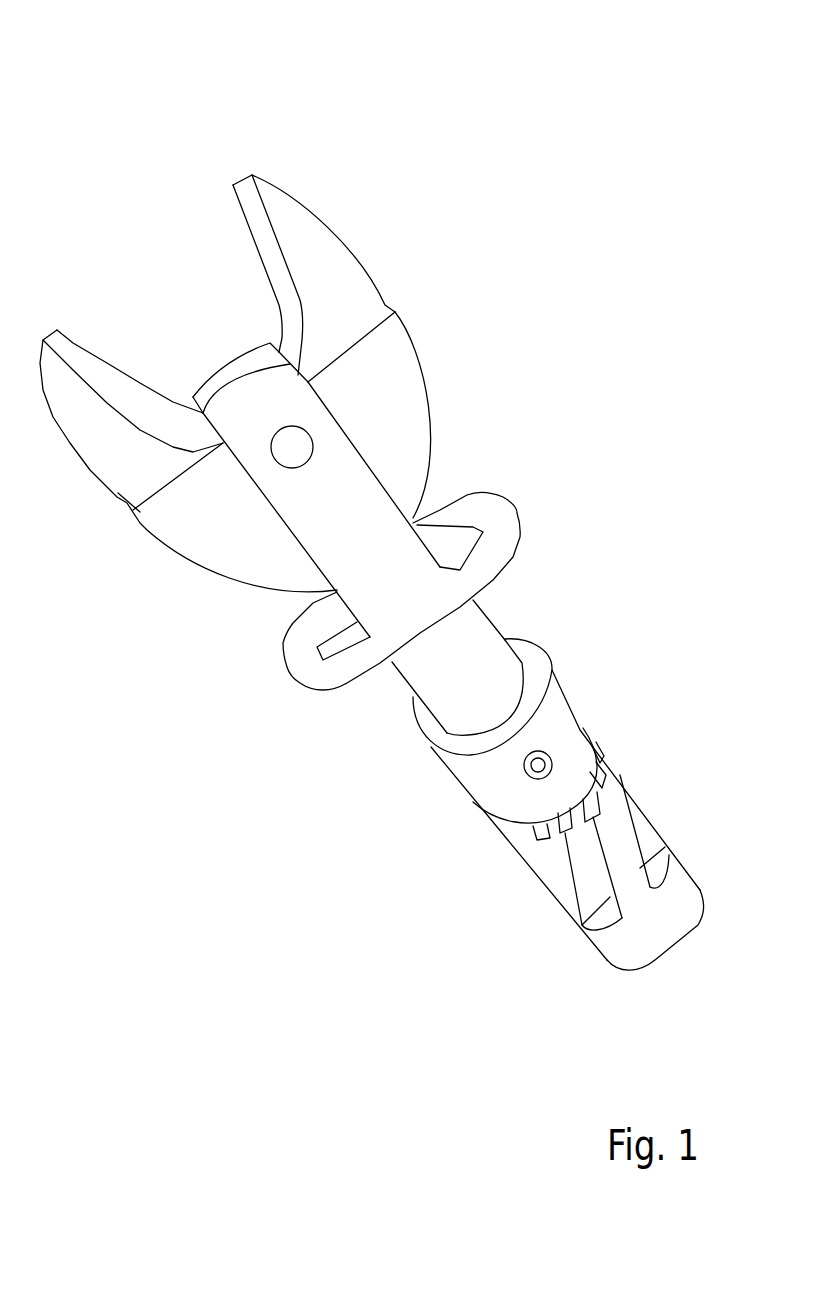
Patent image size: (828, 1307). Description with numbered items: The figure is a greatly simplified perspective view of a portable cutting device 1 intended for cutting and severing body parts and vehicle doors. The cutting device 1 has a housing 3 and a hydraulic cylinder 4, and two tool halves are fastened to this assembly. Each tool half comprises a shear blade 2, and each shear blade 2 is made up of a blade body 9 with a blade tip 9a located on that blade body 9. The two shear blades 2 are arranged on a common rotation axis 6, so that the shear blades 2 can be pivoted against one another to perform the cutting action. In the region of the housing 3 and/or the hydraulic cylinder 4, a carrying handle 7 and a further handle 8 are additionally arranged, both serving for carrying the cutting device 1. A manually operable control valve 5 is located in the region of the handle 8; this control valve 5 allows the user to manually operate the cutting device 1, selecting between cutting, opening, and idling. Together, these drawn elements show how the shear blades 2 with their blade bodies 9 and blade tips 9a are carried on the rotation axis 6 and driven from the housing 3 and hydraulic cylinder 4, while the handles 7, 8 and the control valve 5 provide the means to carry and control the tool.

The cutting device 1 is at (411, 44).
The shear blade 2 is at (400, 220).
The housing 3 is at (560, 703).
The hydraulic cylinder 4 is at (350, 548).
The control valve 5 is at (590, 794).
The rotation axis 6 is at (296, 441).
The carrying handle 7 is at (498, 512).
The handle 8 is at (593, 862).
The blade body 9 is at (303, 233).
The blade tip 9a is at (233, 185).